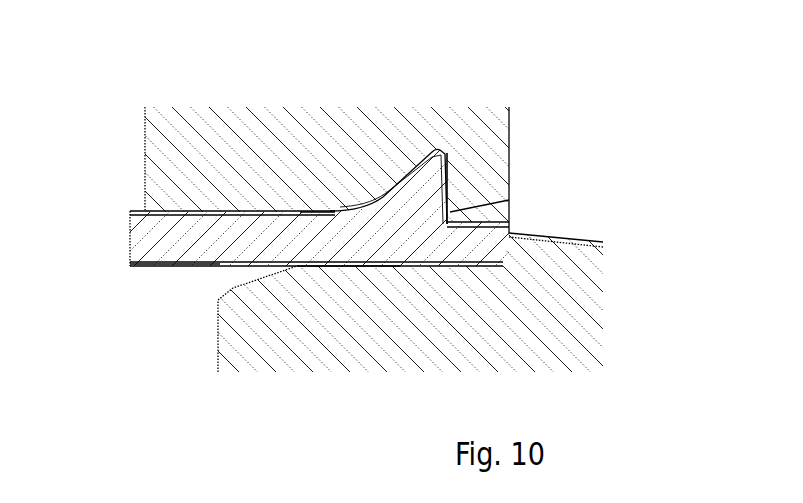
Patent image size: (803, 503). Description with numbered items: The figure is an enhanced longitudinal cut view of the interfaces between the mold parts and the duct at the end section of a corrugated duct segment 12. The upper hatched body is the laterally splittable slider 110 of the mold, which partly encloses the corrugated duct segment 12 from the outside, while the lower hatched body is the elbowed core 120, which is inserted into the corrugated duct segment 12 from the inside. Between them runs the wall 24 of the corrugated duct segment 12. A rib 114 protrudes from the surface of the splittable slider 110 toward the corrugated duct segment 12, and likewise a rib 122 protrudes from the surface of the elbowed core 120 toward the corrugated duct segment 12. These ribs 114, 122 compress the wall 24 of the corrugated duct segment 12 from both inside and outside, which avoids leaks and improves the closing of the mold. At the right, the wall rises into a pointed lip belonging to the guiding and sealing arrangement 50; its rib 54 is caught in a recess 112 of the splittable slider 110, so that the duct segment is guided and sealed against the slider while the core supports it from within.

The corrugated duct segment 12 is at (186, 264).
The wall 24 is at (273, 250).
The guiding and sealing arrangement 50 is at (471, 120).
The rib 54 is at (431, 146).
The splittable slider 110 is at (229, 160).
The recess 112 is at (449, 193).
The rib 114 is at (317, 212).
The elbowed core 120 is at (492, 341).
The rib 122 is at (302, 268).